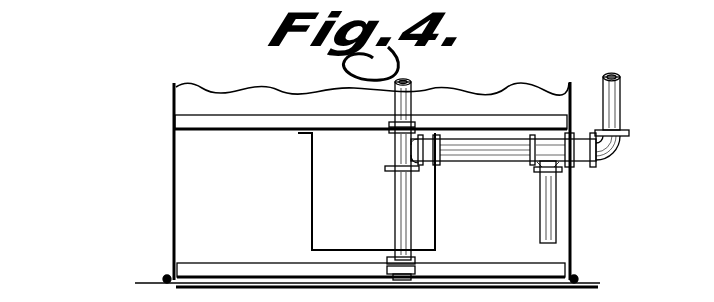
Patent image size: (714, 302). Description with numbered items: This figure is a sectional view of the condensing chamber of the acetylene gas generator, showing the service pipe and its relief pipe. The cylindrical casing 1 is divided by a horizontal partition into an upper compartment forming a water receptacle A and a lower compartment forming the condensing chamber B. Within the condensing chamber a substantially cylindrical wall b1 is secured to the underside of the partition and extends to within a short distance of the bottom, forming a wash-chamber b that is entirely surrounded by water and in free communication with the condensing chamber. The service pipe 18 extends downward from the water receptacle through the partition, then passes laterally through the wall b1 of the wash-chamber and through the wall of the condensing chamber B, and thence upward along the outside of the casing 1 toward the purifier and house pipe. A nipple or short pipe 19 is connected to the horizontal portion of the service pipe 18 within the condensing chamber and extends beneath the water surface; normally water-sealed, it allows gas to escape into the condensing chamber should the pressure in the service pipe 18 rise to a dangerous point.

The water receptacle A is at (178, 100).
The cylindrical casing 1 is at (180, 214).
The condensing chamber B is at (371, 228).
The wash-chamber b is at (366, 191).
The cylindrical wall b1 is at (312, 229).
The service pipe 18 is at (400, 237).
The nipple 19 is at (547, 230).